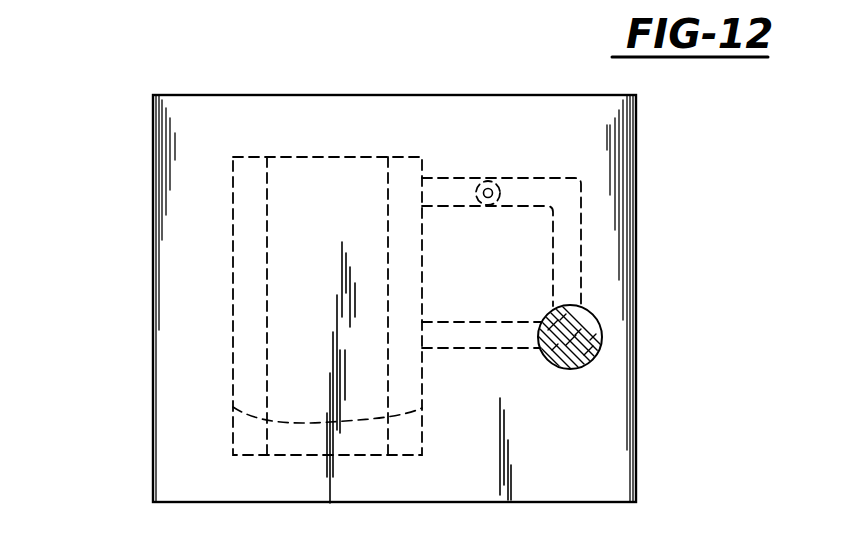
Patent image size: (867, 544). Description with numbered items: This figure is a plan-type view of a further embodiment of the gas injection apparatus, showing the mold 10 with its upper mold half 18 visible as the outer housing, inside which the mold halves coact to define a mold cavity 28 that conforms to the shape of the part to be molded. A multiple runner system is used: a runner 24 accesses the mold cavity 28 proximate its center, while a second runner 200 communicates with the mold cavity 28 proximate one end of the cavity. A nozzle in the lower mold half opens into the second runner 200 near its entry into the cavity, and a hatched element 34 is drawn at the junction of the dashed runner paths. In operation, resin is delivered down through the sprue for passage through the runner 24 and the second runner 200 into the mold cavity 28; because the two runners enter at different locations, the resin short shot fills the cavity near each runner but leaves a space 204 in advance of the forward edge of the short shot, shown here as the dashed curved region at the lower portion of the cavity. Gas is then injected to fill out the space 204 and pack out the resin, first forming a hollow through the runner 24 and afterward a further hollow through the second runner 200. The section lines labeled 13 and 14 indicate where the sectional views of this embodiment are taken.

The mold 10 is at (204, 82).
The upper mold half 18 is at (500, 94).
The mold cavity 28 is at (333, 206).
The space 204 is at (280, 439).
The second runner 200 is at (541, 178).
The hatched member 34 is at (546, 317).
The runner 24 is at (505, 350).
The section line 14 is at (103, 153).
The section line 13 is at (103, 295).